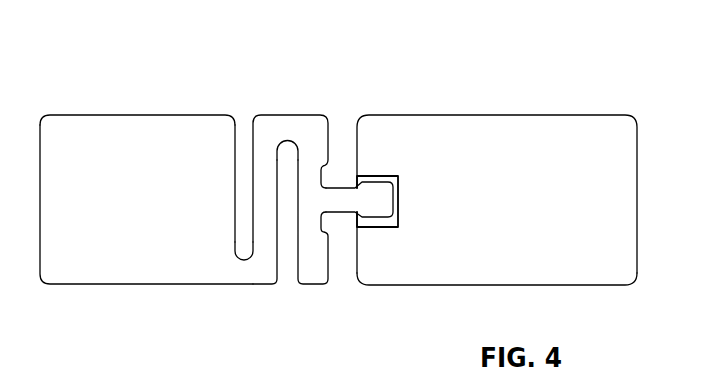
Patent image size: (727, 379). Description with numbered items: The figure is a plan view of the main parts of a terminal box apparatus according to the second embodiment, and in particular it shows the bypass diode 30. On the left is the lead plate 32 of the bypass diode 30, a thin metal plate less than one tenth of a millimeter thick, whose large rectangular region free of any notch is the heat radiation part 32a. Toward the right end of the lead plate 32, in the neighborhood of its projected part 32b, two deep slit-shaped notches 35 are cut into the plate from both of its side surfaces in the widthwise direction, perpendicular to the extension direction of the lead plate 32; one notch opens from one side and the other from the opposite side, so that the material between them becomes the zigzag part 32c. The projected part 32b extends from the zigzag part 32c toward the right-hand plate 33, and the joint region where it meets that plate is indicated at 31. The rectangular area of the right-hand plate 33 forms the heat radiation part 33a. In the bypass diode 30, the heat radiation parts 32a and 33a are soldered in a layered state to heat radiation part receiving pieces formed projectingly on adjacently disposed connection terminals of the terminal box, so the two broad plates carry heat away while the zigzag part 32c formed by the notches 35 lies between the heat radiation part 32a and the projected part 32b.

The bypass diode 30 is at (348, 94).
The welded joint portion 31 is at (385, 236).
The lead plate 32 is at (97, 262).
The heat radiation part 32a is at (110, 130).
The projected part 32b is at (380, 198).
The zigzag part 32c is at (287, 127).
The second plate 33 is at (497, 263).
The heat radiation part 33a is at (572, 263).
The notches 35 is at (247, 223).